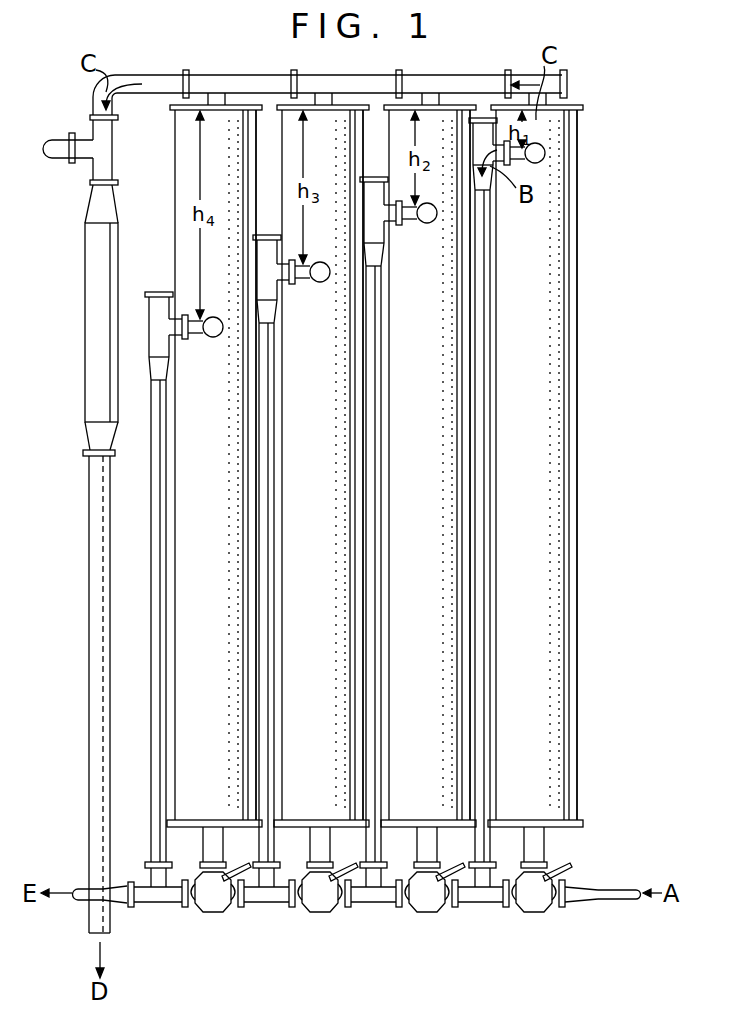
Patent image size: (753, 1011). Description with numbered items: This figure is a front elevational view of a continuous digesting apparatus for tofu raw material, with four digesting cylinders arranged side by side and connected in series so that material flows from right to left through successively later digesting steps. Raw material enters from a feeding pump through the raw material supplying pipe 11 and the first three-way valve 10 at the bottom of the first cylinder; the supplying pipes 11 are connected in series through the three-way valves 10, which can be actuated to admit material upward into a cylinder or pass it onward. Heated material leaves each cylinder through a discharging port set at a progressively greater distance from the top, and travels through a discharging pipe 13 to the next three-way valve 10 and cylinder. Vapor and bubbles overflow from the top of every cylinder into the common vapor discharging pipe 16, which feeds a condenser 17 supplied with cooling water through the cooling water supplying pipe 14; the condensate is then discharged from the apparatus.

The three-way valve 10 is at (208, 914).
The raw material supplying pipe 11 is at (487, 896).
The discharging pipe 13 is at (268, 333).
The cooling water supplying pipe 14 is at (61, 148).
The vapor discharging pipe 16 is at (254, 81).
The condenser 17 is at (95, 293).